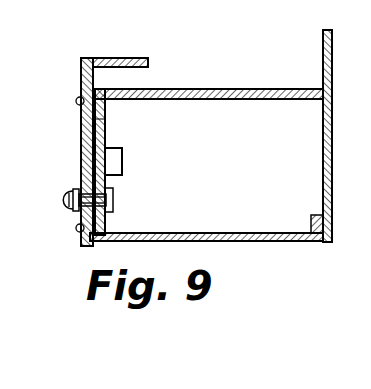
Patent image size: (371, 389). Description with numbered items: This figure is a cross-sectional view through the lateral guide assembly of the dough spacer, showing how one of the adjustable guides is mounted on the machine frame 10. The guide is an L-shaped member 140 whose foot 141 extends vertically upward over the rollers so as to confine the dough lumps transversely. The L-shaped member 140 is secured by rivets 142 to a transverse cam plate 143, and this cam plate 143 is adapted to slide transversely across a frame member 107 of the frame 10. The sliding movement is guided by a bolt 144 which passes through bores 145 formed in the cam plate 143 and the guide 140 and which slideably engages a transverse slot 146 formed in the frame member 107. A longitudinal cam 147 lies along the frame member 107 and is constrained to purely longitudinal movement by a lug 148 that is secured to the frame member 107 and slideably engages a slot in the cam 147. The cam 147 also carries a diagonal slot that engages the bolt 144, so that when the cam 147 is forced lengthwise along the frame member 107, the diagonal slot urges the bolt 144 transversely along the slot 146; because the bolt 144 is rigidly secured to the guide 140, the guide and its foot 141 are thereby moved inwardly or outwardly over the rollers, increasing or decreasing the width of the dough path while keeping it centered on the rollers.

The frame 10 is at (318, 60).
The frame member 107 is at (228, 101).
The L-shaped member 140 is at (82, 135).
The foot 141 is at (113, 58).
The rivet 142 is at (76, 101).
The cam plate 143 is at (81, 165).
The bolt 144 is at (113, 205).
The bore 145 is at (74, 212).
The transverse slot 146 is at (106, 143).
The longitudinal cam 147 is at (107, 115).
The lug 148 is at (122, 165).